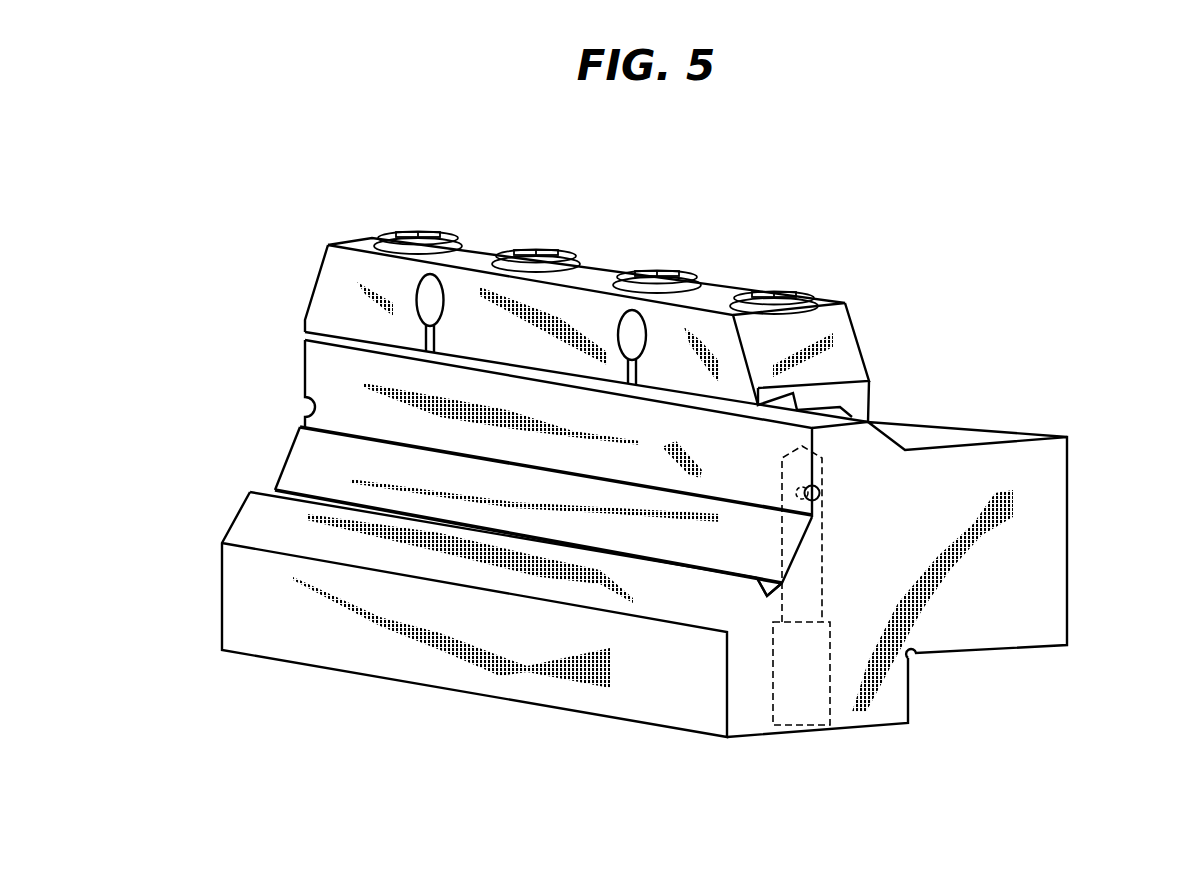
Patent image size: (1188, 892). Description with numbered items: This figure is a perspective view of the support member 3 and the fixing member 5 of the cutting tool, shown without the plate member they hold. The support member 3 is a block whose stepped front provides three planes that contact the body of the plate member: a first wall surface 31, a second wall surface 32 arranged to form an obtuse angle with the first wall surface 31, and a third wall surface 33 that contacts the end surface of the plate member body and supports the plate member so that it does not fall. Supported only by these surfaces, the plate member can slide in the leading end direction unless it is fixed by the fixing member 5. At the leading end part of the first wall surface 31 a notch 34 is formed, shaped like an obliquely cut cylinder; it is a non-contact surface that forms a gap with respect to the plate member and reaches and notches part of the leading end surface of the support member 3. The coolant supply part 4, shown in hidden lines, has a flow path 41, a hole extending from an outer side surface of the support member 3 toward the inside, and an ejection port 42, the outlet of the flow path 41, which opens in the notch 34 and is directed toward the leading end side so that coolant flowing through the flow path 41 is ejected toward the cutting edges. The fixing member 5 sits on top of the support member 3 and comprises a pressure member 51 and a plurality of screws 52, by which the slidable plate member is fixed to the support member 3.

The support member 3 is at (1023, 547).
The first wall surface 31 is at (333, 368).
The second wall surface 32 is at (303, 465).
The third wall surface 33 is at (787, 580).
The notch 34 is at (818, 490).
The coolant supply part 4 is at (836, 702).
The flow path 41 is at (774, 730).
The ejection port 42 is at (807, 512).
The fixing member 5 is at (548, 272).
The pressure member 51 is at (307, 302).
The screws 52 is at (418, 232).